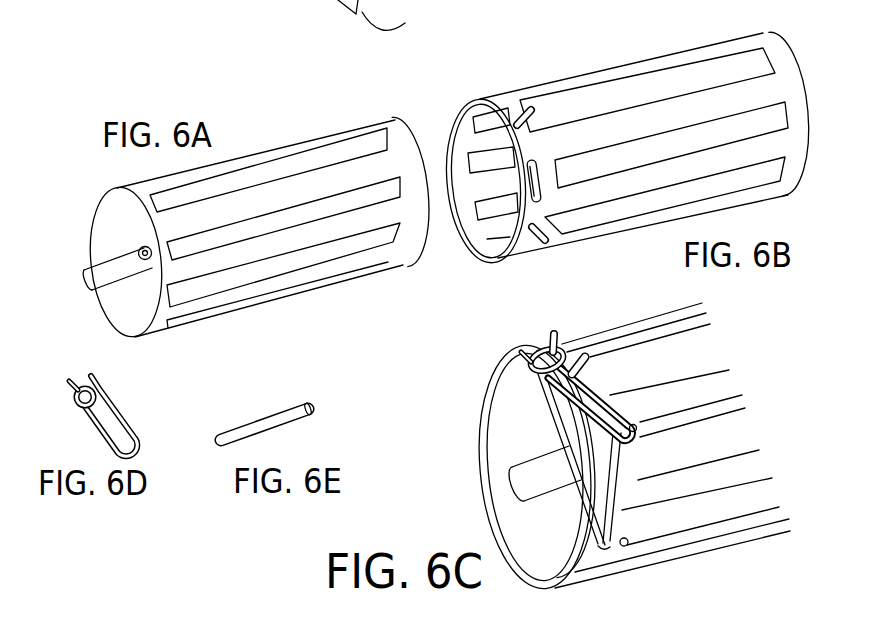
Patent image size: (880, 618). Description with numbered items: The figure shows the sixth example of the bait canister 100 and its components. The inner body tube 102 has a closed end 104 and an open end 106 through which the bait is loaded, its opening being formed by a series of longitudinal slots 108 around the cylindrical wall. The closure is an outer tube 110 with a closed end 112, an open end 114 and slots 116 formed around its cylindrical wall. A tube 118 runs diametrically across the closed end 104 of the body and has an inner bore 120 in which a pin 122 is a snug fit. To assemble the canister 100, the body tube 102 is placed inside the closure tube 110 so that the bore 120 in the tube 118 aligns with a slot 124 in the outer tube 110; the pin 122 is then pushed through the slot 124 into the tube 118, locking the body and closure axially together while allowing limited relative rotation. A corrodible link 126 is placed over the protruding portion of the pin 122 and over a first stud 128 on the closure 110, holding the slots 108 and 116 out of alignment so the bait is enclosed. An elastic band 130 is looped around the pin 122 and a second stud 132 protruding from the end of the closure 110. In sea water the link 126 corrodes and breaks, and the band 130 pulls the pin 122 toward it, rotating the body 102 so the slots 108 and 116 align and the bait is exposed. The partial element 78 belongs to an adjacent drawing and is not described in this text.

In FIG. 6A, the adjacent component (partial) 78 is at (376, 15).
In FIG. 6C, the canister 100 is at (641, 317).
In FIG. 6A, the inner body tube 102 is at (328, 136).
In FIG. 6C, the inner body tube 102 is at (733, 437).
In FIG. 6A, the closed end 104 is at (102, 233).
In FIG. 6C, the closed end 104 is at (532, 422).
In FIG. 6B, the open end 106 is at (436, 233).
In FIG. 6A, the slots 108 is at (287, 217).
In FIG. 6B, the outer tube 110 is at (802, 86).
In FIG. 6C, the outer tube 110 is at (693, 487).
In FIG. 6B, the closed end 112 is at (835, 170).
In FIG. 6B, the open end 114 is at (453, 123).
In FIG. 6B, the slots 116 is at (748, 132).
In FIG. 6A, the tube 118 is at (102, 273).
In FIG. 6C, the tube 118 is at (518, 473).
In FIG. 6A, the inner bore 120 is at (152, 250).
In FIG. 6C, the pin 122 is at (633, 433).
In FIG. 6E, the pin 122 is at (270, 423).
In FIG. 6B, the slot 124 is at (539, 183).
In FIG. 6C, the corrodible link 126 is at (614, 405).
In FIG. 6D, the corrodible link 126 is at (125, 423).
In FIG. 6B, the first stud 128 is at (520, 116).
In FIG. 6C, the first stud 128 is at (589, 366).
In FIG. 6C, the elastic band 130 is at (620, 503).
In FIG. 6B, the second stud 132 is at (536, 242).
In FIG. 6C, the second stud 132 is at (632, 545).